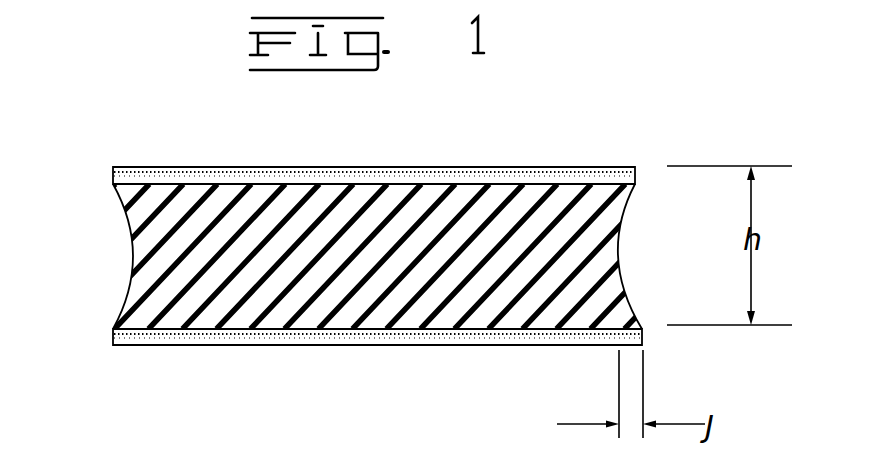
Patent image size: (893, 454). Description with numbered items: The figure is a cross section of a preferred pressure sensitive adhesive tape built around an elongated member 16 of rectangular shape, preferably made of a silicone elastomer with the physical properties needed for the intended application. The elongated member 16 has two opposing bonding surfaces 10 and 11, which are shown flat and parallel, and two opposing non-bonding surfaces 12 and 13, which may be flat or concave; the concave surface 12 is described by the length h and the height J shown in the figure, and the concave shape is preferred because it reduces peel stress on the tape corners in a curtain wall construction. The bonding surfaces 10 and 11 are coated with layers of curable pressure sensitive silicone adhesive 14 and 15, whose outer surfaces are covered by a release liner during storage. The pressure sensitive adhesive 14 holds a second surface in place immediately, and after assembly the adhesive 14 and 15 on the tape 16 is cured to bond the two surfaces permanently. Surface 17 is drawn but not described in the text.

The bonding surface 10 is at (505, 184).
The bonding surface 11 is at (508, 330).
The non-bonding surface 12 is at (618, 248).
The non-bonding surface 13 is at (130, 242).
The curable pressure sensitive silicone adhesive 14 is at (208, 167).
The curable pressure sensitive silicone adhesive 15 is at (287, 345).
The elongated member 16 is at (380, 215).
The bottom outer surface 17 is at (430, 365).